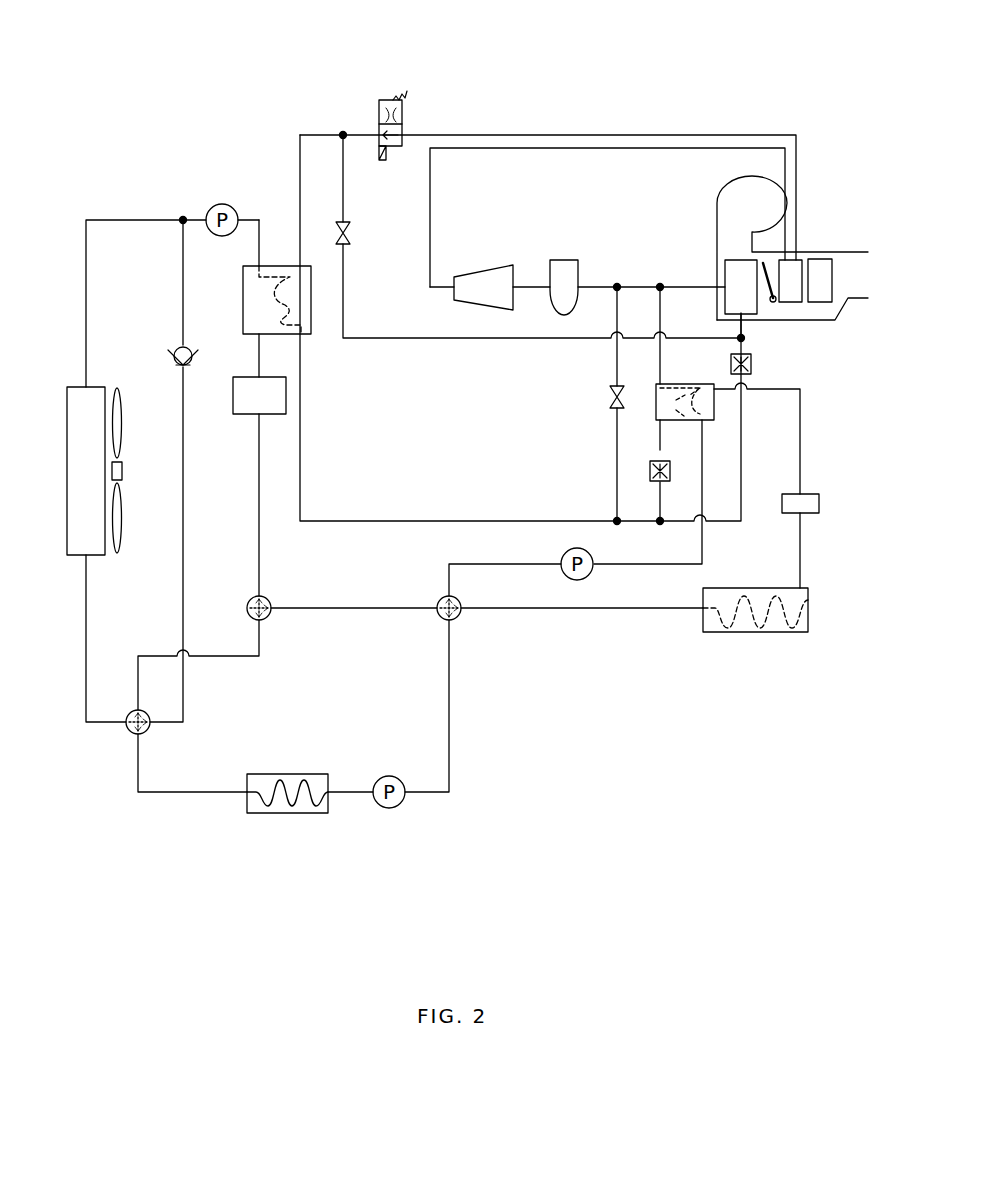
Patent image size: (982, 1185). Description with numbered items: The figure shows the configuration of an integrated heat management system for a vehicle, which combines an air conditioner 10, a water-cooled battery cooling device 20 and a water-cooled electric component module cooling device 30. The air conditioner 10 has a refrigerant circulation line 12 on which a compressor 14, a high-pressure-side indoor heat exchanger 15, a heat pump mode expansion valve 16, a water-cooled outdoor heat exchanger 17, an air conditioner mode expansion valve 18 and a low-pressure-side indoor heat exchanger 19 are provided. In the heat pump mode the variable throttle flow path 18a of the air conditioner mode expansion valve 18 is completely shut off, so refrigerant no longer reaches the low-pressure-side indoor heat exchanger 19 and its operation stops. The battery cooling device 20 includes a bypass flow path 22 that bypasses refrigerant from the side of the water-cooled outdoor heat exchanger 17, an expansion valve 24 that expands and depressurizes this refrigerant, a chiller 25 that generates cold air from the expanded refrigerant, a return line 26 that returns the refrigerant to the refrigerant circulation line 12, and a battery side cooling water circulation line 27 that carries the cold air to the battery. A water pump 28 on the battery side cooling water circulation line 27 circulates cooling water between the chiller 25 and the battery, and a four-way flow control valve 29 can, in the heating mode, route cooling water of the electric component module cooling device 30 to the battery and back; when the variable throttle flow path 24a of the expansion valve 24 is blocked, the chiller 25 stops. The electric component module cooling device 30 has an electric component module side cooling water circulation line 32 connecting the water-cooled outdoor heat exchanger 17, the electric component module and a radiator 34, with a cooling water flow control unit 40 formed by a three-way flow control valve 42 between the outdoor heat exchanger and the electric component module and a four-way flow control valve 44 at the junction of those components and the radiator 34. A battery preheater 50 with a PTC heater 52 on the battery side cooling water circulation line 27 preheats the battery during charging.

The air conditioner 10 is at (719, 130).
The refrigerant circulation line 12 is at (600, 134).
The compressor 14 is at (480, 266).
The high-pressure-side indoor heat exchanger 15 is at (802, 266).
The heat pump mode expansion valve 16 is at (402, 105).
The water-cooled outdoor heat exchanger 17 is at (277, 265).
The air conditioner mode expansion valve 18 is at (752, 362).
The variable throttle flow path 18a is at (745, 378).
The low-pressure-side indoor heat exchanger 19 is at (758, 300).
The water-cooled battery cooling device 20 is at (792, 573).
The bypass flow path 22 is at (660, 492).
The expansion valve 24 is at (703, 455).
The variable throttle flow path 24a is at (650, 466).
The chiller 25 is at (714, 400).
The return line 26 is at (660, 362).
The battery side cooling water circulation line 27 is at (802, 478).
The water pump 28 is at (582, 582).
The four-way flow control valve 29 is at (456, 616).
The water-cooled electric component module cooling device 30 is at (128, 797).
The electric component module side cooling water circulation line 32 is at (128, 218).
The radiator 34 is at (70, 385).
The cooling water flow control unit 40 is at (281, 665).
The three-way flow control valve 42 is at (267, 617).
The four-way flow control valve 44 is at (150, 730).
The battery preheater 50 is at (792, 514).
The PTC heater 52 is at (755, 573).